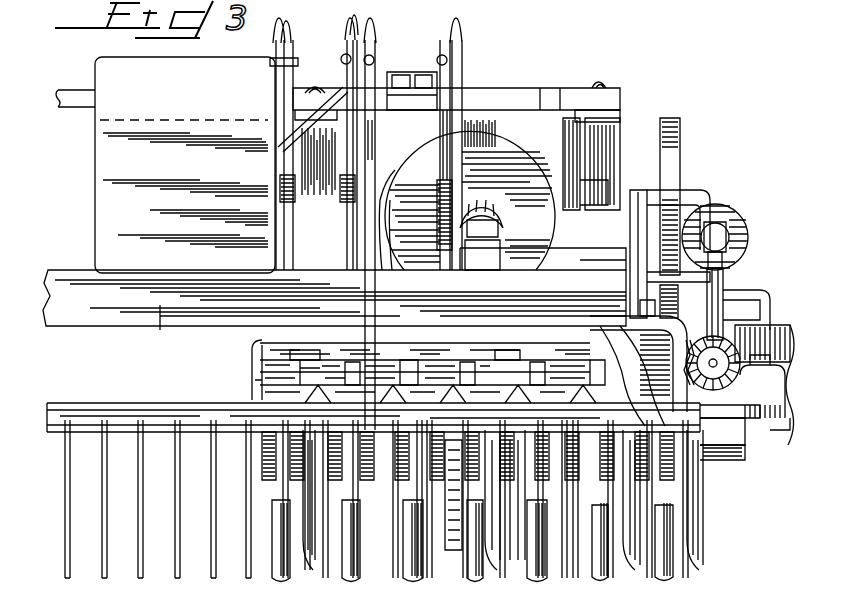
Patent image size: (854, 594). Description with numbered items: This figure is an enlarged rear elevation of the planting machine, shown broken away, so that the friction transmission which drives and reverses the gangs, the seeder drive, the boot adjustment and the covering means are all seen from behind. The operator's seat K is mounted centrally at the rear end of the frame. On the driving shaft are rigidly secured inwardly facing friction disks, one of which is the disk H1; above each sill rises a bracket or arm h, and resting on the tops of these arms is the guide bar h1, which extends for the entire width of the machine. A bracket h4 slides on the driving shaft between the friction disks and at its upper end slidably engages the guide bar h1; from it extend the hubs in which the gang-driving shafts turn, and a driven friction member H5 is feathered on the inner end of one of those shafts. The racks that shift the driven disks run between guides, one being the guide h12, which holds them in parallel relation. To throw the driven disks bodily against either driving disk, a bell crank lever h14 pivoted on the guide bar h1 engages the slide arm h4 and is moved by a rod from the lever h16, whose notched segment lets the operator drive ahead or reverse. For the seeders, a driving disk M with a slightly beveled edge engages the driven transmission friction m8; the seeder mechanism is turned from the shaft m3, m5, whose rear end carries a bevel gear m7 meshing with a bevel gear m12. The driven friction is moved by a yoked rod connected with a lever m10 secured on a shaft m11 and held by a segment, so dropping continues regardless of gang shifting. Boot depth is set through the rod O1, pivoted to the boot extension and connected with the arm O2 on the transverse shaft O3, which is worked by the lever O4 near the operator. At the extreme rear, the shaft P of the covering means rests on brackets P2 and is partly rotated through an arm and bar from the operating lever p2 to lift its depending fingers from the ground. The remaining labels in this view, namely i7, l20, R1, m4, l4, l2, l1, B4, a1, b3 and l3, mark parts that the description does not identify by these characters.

The operator's seat K is at (110, 163).
The shaft m11 is at (482, 262).
The friction disk H1 is at (572, 112).
The guide bar h1 is at (550, 98).
The bracket h4 is at (505, 112).
The lever h16 is at (291, 40).
The lever O4 is at (349, 40).
The guide h12 is at (335, 98).
The operating lever p2 is at (384, 78).
The lever m10 is at (455, 78).
The bell crank lever h14 is at (444, 108).
The bracket or arm h is at (604, 142).
The driving disk M is at (672, 142).
The arm i7 is at (576, 215).
The driven friction member H5 is at (508, 178).
The pinion l20 is at (488, 213).
The shaft P is at (385, 202).
The bracket R1 is at (580, 286).
The driven transmission friction m8 is at (726, 212).
The hub m4 is at (728, 226).
The shaft m3 is at (728, 246).
The shaft m5 is at (726, 280).
The pipe l4 is at (728, 300).
The hatched block l2 is at (742, 318).
The bracket edge l1 is at (742, 324).
The bevel gear m7 is at (724, 340).
The module bar B4 is at (262, 334).
The pin a1 is at (147, 330).
The shaft O3 is at (275, 344).
The arm O2 is at (262, 368).
The brackets P2 is at (128, 412).
The rods b3 is at (140, 508).
The rod O1 is at (350, 490).
The bracket l3 is at (690, 375).
The bevel gear m12 is at (746, 458).